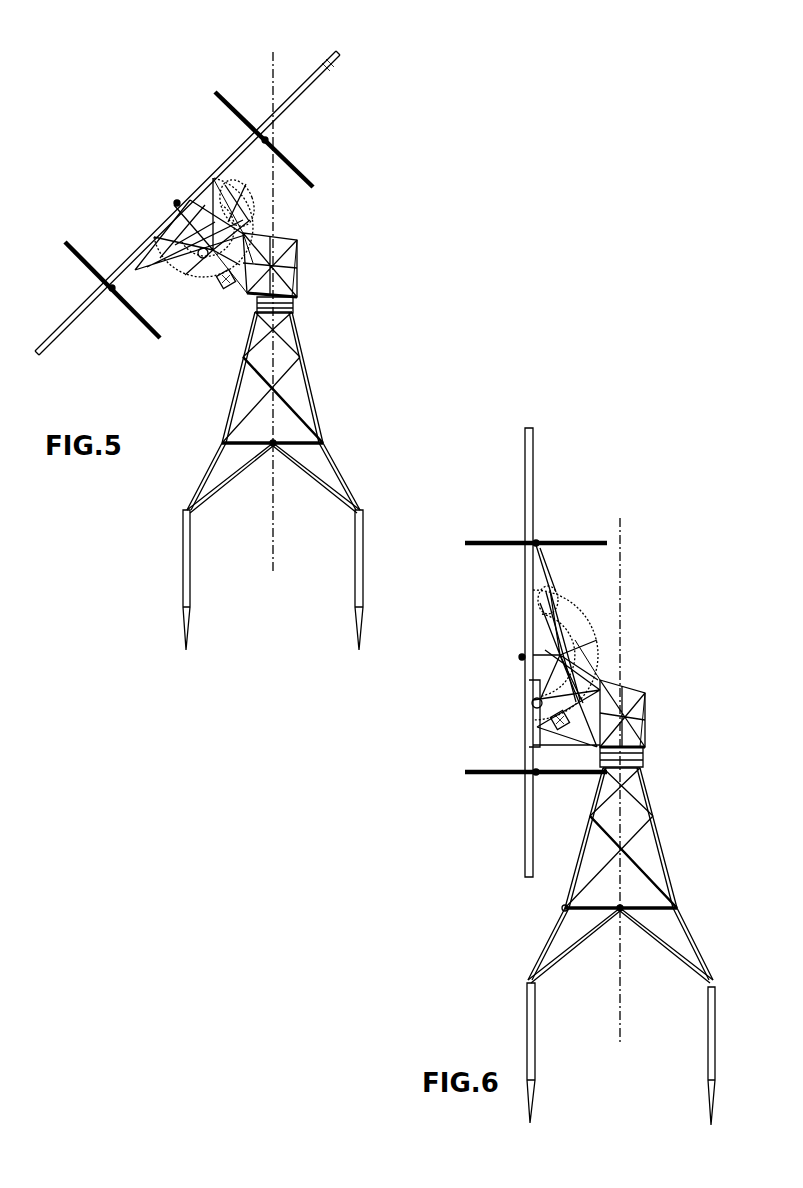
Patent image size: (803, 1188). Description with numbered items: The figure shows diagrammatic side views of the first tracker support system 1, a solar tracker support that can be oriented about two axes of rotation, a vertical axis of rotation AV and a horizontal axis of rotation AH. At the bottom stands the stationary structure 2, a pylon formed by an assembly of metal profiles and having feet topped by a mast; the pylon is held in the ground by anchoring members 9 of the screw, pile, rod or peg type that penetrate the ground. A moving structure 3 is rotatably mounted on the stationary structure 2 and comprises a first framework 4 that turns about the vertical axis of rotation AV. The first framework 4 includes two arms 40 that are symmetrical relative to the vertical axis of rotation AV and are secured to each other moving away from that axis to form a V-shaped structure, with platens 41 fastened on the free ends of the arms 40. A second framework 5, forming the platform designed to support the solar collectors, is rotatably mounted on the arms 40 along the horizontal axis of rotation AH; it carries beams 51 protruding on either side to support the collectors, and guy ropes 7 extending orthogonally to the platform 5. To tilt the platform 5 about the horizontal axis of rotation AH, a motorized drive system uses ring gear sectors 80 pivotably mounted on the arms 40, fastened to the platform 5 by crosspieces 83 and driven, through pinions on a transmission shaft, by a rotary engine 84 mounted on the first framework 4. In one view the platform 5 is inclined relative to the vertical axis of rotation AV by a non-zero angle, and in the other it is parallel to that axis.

In FIG. 5, the tracker support system 1 is at (383, 247).
In FIG. 6, the tracker support system 1 is at (460, 676).
In FIG. 5, the stationary structure 2 is at (213, 407).
In FIG. 6, the stationary structure 2 is at (545, 917).
In FIG. 5, the moving structure 3 is at (218, 207).
In FIG. 6, the moving structure 3 is at (598, 652).
In FIG. 5, the first framework 4 is at (290, 245).
In FIG. 6, the first framework 4 is at (646, 703).
In FIG. 5, the second framework 5 is at (127, 250).
In FIG. 6, the second framework 5 is at (521, 732).
In FIG. 5, the guy ropes 7 is at (300, 170).
In FIG. 6, the guy ropes 7 is at (607, 545).
In FIG. 5, the anchoring members 9 is at (182, 550).
In FIG. 6, the anchoring members 9 is at (528, 1022).
In FIG. 5, the arms 40 is at (283, 233).
In FIG. 6, the arms 40 is at (627, 683).
In FIG. 5, the platens 41 is at (203, 253).
In FIG. 6, the platens 41 is at (537, 703).
In FIG. 5, the beams 51 is at (323, 75).
In FIG. 6, the beams 51 is at (533, 452).
In FIG. 5, the ring gear sectors 80 is at (157, 273).
In FIG. 6, the ring gear sectors 80 is at (597, 630).
In FIG. 5, the crosspieces 83 is at (163, 237).
In FIG. 6, the crosspieces 83 is at (597, 597).
In FIG. 5, the rotary engine 84 is at (227, 283).
In FIG. 6, the rotary engine 84 is at (576, 735).
In FIG. 5, the vertical axis of rotation AV is at (273, 57).
In FIG. 6, the vertical axis of rotation AV is at (620, 520).
In FIG. 5, the horizontal axis of rotation AH is at (177, 203).
In FIG. 6, the horizontal axis of rotation AH is at (522, 657).